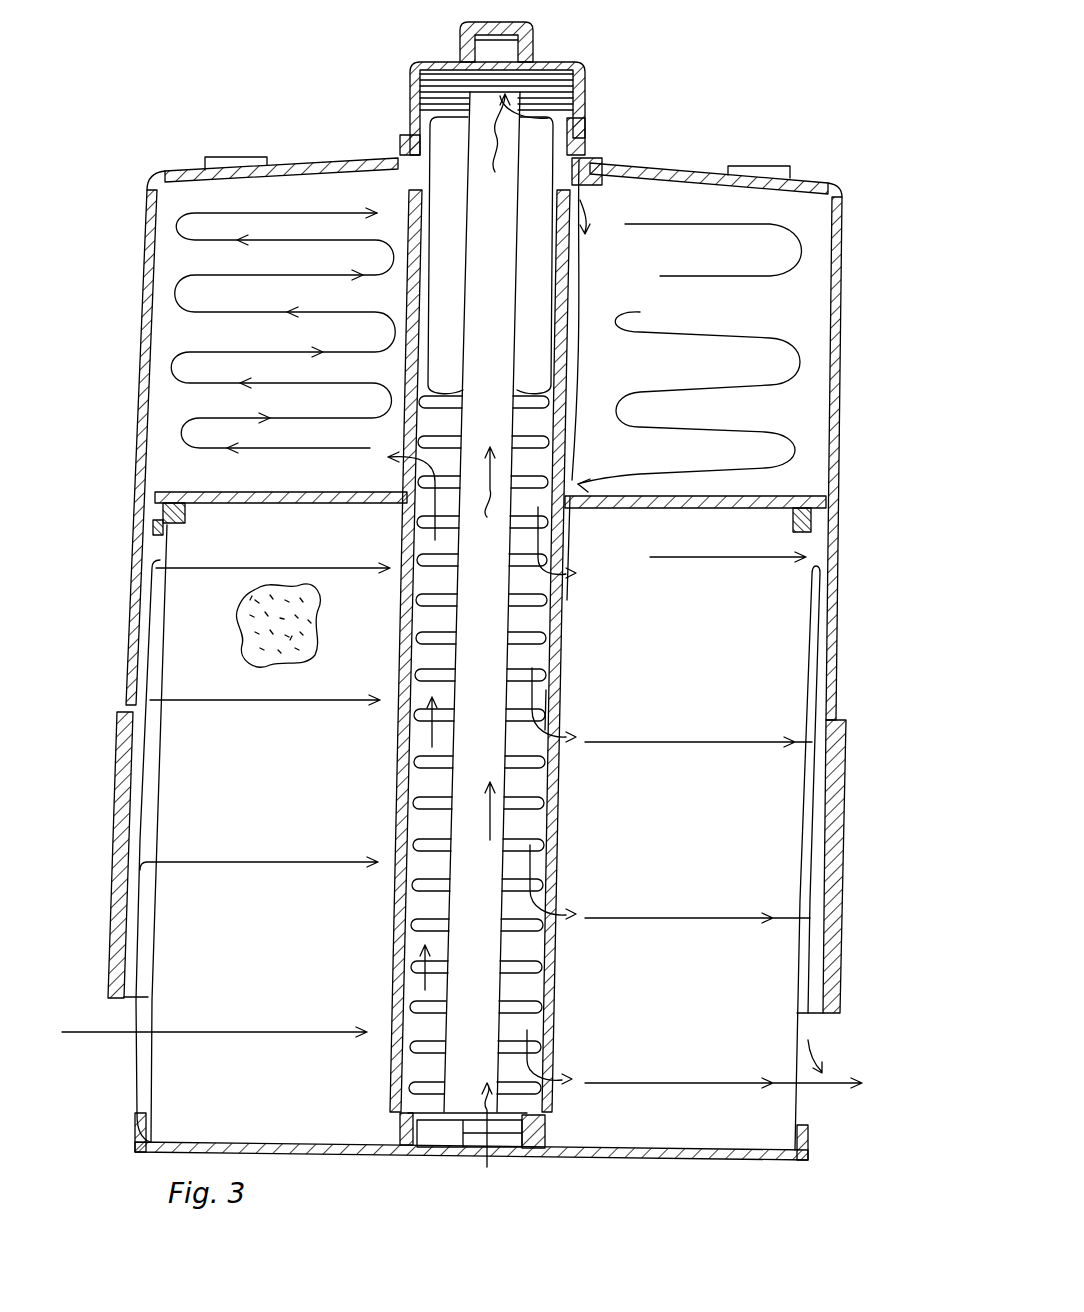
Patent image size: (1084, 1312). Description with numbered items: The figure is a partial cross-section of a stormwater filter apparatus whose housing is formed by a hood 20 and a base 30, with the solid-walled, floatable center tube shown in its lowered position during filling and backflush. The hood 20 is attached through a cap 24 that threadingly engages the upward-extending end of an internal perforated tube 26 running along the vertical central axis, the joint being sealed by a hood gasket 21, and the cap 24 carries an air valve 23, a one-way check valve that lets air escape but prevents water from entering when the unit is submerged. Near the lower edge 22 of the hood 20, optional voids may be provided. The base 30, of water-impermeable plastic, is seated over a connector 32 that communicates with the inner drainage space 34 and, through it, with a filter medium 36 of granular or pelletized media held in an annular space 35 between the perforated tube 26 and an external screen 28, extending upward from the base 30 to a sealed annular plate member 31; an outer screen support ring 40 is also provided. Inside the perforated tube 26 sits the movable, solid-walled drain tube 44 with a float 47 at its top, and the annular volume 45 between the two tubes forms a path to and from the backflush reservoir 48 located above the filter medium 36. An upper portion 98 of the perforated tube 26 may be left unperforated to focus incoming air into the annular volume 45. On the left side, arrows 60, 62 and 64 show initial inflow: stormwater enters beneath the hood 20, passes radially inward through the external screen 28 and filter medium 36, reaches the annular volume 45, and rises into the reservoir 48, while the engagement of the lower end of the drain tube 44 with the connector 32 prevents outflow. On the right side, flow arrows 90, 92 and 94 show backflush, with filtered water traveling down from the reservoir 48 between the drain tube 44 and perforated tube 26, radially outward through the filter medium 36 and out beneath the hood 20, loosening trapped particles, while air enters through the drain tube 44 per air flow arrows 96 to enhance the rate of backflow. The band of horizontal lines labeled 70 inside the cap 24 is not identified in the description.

The hood 20 is at (843, 312).
The hood gasket 21 is at (588, 157).
The lower edge 22 is at (822, 1023).
The air valve 23 is at (505, 25).
The cap 24 is at (547, 63).
The internal perforated tube 26 is at (566, 553).
The external screen 28 is at (810, 638).
The base 30 is at (706, 1160).
The annular plate member 31 is at (745, 515).
The connector 32 is at (422, 1138).
The inner drainage space 34 is at (541, 706).
The annular space 35 is at (717, 633).
The filter medium 36 is at (308, 623).
The outer screen support ring 40 is at (184, 525).
The drain tube 44 is at (406, 842).
The annular volume 45 is at (408, 779).
The float 47 is at (546, 306).
The backflush reservoir 48 is at (707, 375).
The inflow arrows 60 is at (227, 568).
The inflow arrows 62 is at (433, 510).
The inflow arrows 64 is at (252, 353).
The filter media 70 is at (583, 105).
The backflush flow arrows 90 is at (766, 388).
The backflush flow arrows 92 is at (546, 546).
The backflush flow arrows 94 is at (737, 562).
The air flow arrows 96 is at (478, 825).
The upper portion 98 is at (584, 335).